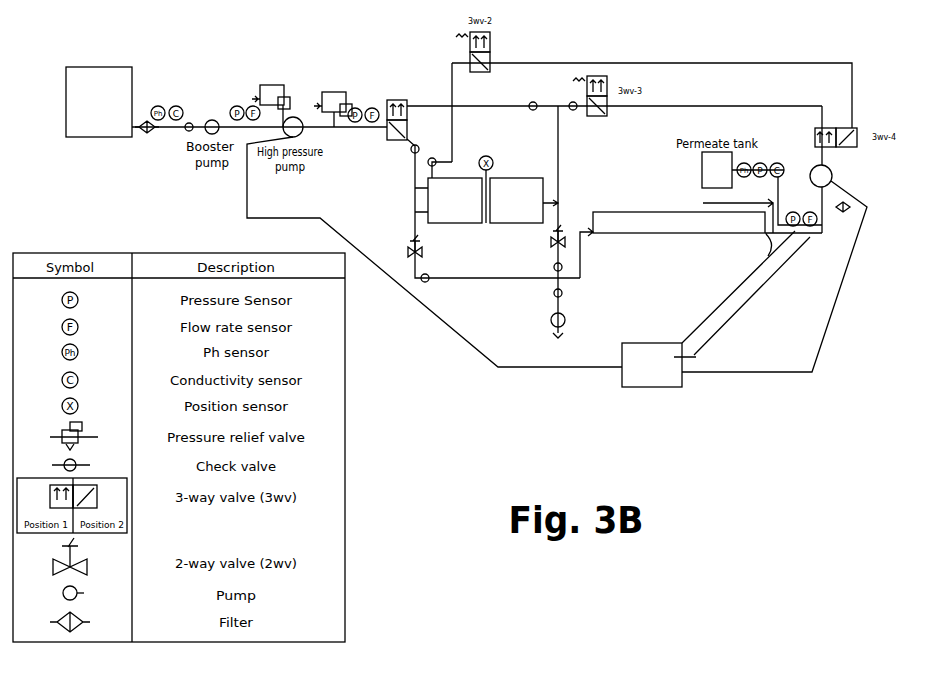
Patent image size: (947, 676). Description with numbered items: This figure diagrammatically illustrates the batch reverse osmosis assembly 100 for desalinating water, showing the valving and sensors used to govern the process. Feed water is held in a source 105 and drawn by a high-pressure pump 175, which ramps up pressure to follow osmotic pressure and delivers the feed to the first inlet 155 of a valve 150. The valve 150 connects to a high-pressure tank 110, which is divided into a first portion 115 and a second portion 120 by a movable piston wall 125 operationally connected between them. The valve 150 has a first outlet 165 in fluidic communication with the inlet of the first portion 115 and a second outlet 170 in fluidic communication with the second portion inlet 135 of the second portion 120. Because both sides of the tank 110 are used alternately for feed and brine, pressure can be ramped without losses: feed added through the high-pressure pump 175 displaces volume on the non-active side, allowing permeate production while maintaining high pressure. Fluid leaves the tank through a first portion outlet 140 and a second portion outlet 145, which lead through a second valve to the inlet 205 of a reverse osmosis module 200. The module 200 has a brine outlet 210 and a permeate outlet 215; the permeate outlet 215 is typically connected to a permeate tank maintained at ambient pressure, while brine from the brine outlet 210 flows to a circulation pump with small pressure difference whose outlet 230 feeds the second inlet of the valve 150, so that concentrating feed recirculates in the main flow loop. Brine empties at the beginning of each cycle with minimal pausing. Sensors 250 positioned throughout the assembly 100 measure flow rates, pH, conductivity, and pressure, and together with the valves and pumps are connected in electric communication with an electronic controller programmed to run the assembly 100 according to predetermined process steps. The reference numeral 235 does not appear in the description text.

The assembly 100 is at (151, 205).
The source 105 is at (111, 110).
The high-pressure tank 110 is at (428, 209).
The first portion 115 is at (441, 200).
The second portion 120 is at (501, 200).
The movable piston wall 125 is at (490, 190).
The second portion inlet 135 is at (413, 191).
The first portion outlet 140 is at (427, 212).
The second portion outlet 145 is at (548, 212).
The valve 150 is at (386, 103).
The first inlet 155 is at (382, 137).
The first outlet 165 is at (435, 148).
The second outlet 170 is at (408, 106).
The high-pressure pump 175 is at (307, 135).
The reverse osmosis module 200 is at (667, 234).
The inlet 205 is at (588, 234).
The brine outlet 210 is at (771, 244).
The permeate outlet 215 is at (725, 213).
The outlet 230 is at (813, 165).
The permeate sensors 235 is at (818, 189).
The sensors 250 is at (251, 105).